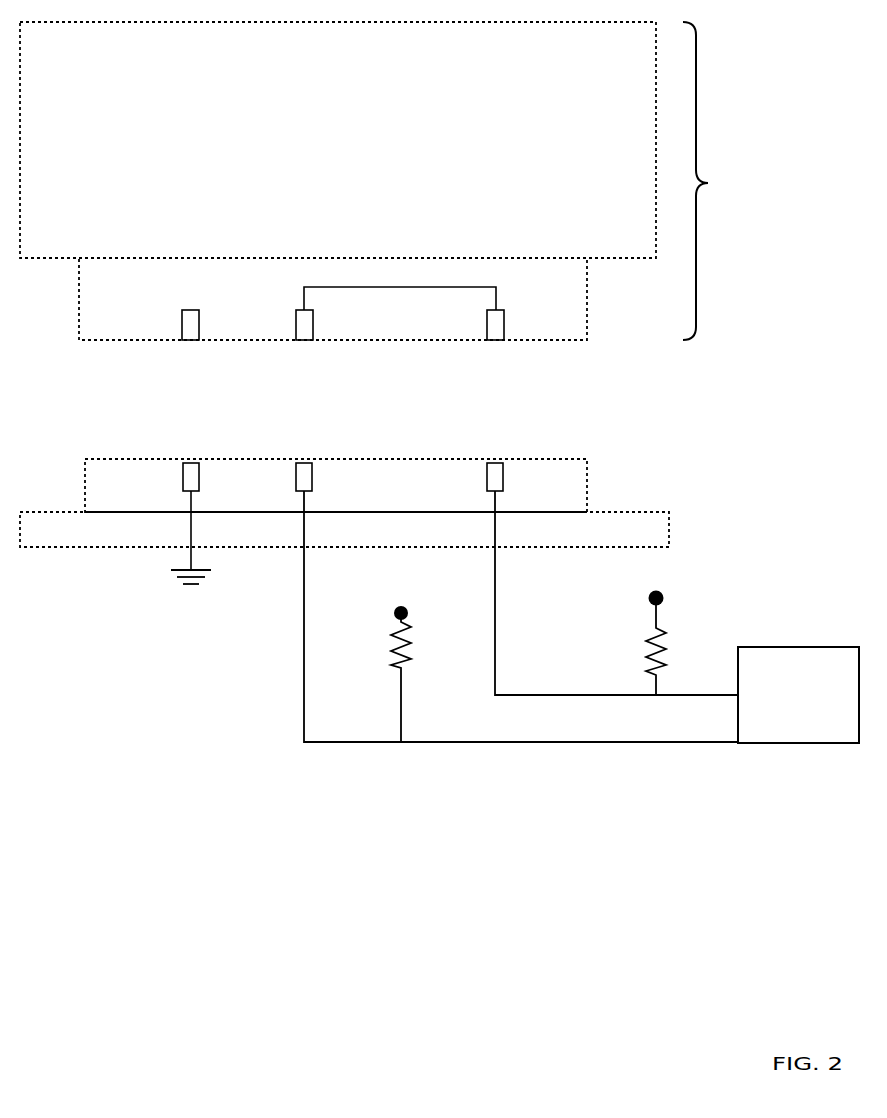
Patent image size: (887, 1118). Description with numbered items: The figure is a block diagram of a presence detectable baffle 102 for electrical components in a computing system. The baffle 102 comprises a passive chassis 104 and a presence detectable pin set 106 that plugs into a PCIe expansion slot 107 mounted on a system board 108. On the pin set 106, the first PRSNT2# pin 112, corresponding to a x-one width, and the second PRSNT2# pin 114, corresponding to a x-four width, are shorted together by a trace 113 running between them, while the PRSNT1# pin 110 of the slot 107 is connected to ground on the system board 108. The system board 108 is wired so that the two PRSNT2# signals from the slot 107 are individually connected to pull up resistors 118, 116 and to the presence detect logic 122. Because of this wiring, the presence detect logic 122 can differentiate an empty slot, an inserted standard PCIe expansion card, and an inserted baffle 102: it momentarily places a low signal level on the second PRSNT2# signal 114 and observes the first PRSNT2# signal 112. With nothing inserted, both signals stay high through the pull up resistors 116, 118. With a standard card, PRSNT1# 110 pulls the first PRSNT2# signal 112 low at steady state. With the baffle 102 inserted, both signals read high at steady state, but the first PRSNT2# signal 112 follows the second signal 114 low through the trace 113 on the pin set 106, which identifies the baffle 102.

The presence detectable baffle 102 is at (837, 204).
The passive chassis 104 is at (422, 150).
The presence detectable pin set 106 is at (350, 281).
The PCIe expansion slot 107 is at (797, 485).
The system board 108 is at (825, 538).
The PRSNT1# signal 110 is at (203, 428).
The first PRSNT2# pin 112 is at (312, 428).
The trace 113 is at (409, 268).
The second PRSNT2# pin 114 is at (510, 428).
The pull up resistor 116 is at (640, 658).
The pull up resistor 118 is at (389, 663).
The presence detect logic 122 is at (813, 730).